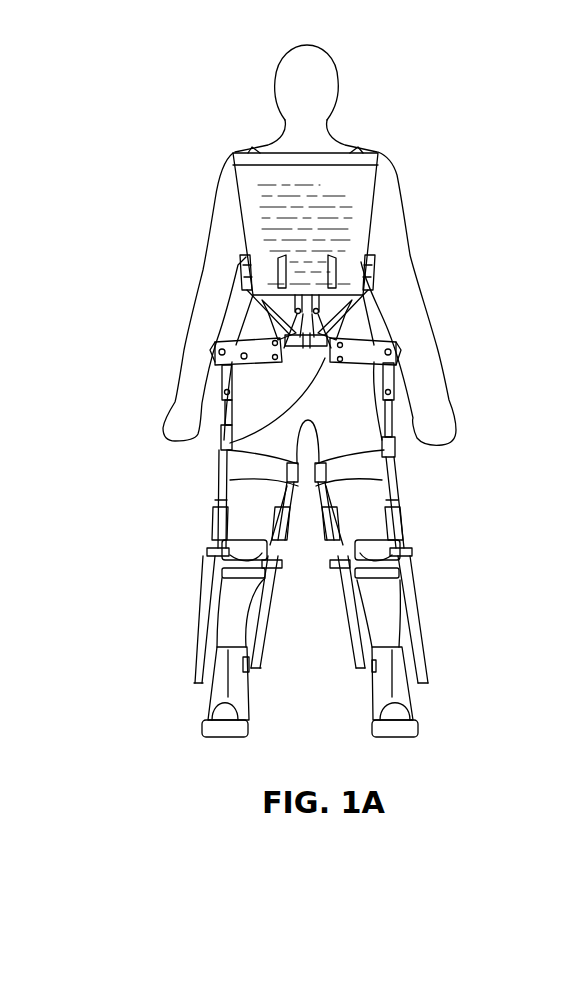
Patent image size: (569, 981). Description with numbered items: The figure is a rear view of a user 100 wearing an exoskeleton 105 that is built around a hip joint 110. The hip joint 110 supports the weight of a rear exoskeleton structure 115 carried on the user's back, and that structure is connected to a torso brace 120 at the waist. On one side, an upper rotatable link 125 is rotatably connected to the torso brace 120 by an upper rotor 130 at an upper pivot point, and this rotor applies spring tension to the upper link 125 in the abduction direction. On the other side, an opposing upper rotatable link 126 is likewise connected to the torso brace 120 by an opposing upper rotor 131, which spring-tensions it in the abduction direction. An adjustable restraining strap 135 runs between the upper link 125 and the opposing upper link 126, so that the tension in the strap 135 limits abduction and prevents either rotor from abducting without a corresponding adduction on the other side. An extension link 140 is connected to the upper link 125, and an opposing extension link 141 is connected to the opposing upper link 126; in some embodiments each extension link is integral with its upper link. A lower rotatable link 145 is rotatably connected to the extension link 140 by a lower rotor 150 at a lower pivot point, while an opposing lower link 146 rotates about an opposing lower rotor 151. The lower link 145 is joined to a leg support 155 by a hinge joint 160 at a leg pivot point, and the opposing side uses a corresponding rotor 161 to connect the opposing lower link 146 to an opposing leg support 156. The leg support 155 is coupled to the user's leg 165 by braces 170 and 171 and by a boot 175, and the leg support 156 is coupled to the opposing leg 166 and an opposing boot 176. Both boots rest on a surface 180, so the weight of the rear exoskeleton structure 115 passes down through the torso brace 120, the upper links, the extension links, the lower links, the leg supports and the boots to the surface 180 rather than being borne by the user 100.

The user 100 is at (342, 88).
The exoskeleton 105 is at (381, 152).
The hip joint 110 is at (219, 438).
The rear exoskeleton structure 115 is at (353, 193).
The torso brace 120 is at (243, 288).
The upper rotatable link 125 is at (348, 320).
The opposing upper rotatable link 126 is at (262, 293).
The upper rotor 130 is at (372, 272).
The opposing upper rotor 131 is at (280, 306).
The adjustable restraining strap 135 is at (250, 300).
The extension link 140 is at (393, 390).
The extension link 141 is at (226, 396).
The lower rotatable link 145 is at (400, 366).
The opposing lower link 146 is at (226, 345).
The lower rotor 150 is at (362, 332).
The opposing lower rotor 151 is at (250, 375).
The leg support 155 is at (393, 427).
The leg support 156 is at (226, 430).
The hinge joint 160 is at (396, 358).
The rotor 161 is at (265, 352).
The leg 165 is at (388, 622).
The opposing leg 166 is at (232, 622).
The brace 170 is at (395, 468).
The brace 171 is at (407, 572).
The boot 175 is at (405, 672).
The opposing boot 176 is at (210, 670).
The surface 180 is at (450, 745).